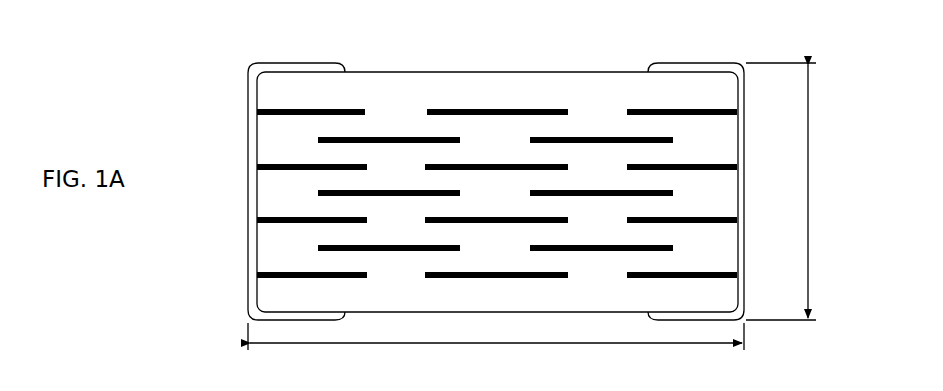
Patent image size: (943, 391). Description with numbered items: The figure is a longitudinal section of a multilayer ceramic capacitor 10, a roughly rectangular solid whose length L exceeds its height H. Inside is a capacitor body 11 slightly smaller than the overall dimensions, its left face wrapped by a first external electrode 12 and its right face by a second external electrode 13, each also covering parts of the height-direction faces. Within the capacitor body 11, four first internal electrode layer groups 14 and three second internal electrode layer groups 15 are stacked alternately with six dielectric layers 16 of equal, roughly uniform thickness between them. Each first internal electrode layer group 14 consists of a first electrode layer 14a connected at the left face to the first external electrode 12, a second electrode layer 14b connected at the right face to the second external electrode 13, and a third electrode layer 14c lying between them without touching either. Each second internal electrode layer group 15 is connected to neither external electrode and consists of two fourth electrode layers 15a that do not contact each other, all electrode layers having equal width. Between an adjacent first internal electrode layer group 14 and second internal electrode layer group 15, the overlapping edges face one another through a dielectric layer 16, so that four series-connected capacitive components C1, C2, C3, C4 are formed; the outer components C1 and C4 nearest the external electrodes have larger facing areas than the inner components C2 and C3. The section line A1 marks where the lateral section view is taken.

The multilayer ceramic capacitor 10 is at (266, 63).
The capacitor body 11 is at (449, 71).
The first external electrode 12 is at (286, 63).
The second external electrode 13 is at (700, 62).
The first internal electrode layer group 14 is at (741, 112).
The first electrode layer 14a is at (325, 110).
The second electrode layer 14b is at (666, 110).
The third electrode layer 14c is at (495, 110).
The second internal electrode layer group 15 is at (673, 143).
The fourth electrode layer 15a is at (392, 137).
The dielectric layer 16 is at (367, 153).
The line A1- A1 is at (245, 113).
The capacitive component C1 is at (342, 116).
The capacitive component C2 is at (444, 116).
The capacitive component C3 is at (550, 116).
The capacitive component C4 is at (648, 116).
The length L is at (496, 344).
The height H is at (785, 191).